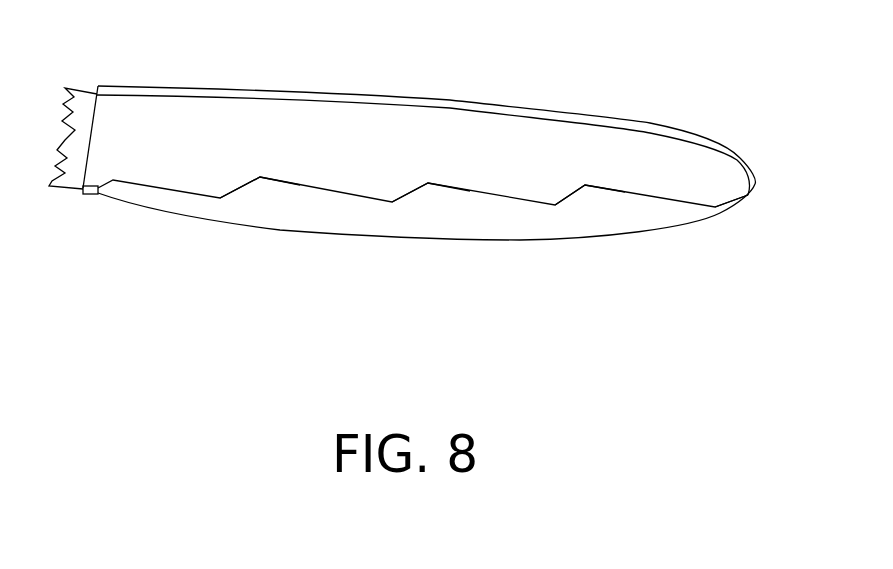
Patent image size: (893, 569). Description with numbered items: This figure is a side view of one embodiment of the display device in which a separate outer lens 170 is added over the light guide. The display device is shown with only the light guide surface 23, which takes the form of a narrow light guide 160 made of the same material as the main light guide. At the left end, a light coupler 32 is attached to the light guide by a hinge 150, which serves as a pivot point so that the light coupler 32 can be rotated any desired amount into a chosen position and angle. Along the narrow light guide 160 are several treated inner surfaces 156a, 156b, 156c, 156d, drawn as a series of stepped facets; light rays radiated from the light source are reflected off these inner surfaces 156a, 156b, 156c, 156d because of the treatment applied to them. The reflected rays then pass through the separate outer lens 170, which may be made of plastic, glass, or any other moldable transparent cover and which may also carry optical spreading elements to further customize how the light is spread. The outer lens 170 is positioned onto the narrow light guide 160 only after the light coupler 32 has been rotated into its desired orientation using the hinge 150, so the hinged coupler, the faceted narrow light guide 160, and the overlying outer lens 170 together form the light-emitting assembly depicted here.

The light coupler 32 is at (82, 74).
The separate outer lens 170 is at (436, 81).
The light guide surface 23 is at (401, 261).
The narrow light guide 160 is at (462, 225).
The inner surface 156a is at (238, 167).
The inner surface 156b is at (407, 174).
The inner surface 156c is at (567, 177).
The inner surface 156d is at (733, 181).
The hinge 150 is at (93, 209).